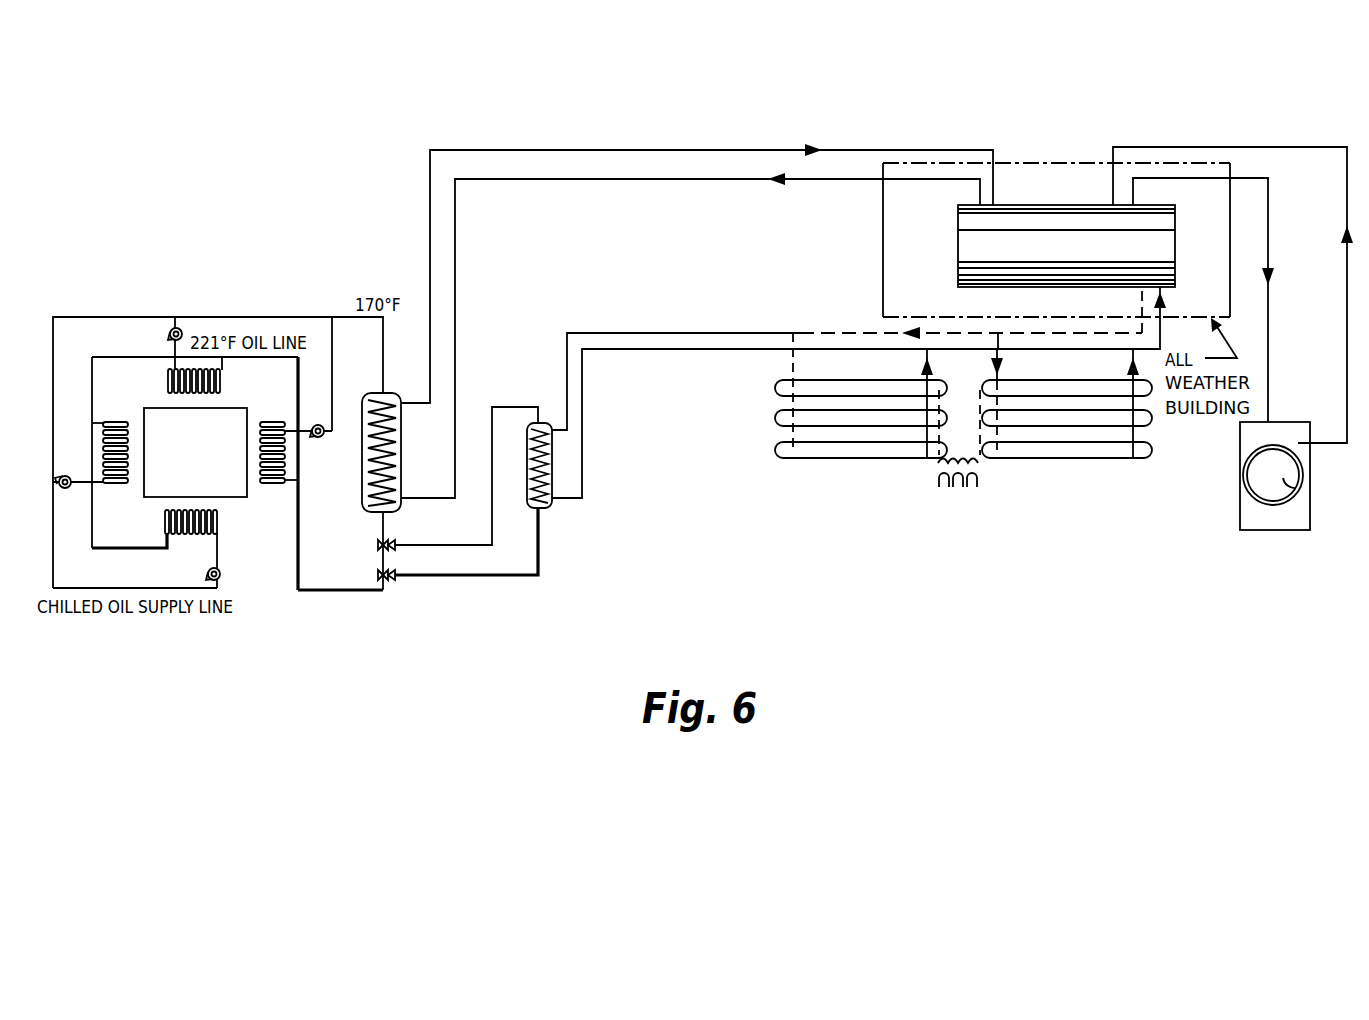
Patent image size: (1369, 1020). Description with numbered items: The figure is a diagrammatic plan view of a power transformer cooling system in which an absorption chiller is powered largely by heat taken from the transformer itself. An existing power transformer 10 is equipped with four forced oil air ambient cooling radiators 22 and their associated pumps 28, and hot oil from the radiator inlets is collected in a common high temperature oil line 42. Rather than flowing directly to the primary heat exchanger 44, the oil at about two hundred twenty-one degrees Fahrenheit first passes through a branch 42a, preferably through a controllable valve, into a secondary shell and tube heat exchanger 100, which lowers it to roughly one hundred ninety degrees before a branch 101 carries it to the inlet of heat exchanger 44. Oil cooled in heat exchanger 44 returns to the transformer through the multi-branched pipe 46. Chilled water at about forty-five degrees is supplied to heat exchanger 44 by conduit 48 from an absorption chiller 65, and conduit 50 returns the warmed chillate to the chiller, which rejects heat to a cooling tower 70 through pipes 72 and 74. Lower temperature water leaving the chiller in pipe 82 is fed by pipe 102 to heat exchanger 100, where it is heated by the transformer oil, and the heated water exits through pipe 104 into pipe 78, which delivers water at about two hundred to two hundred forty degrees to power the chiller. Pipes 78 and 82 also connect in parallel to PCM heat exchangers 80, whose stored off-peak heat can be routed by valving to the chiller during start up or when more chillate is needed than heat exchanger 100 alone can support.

The power transformer 10 is at (230, 497).
The forced oil air ambient cooling radiators 22 is at (168, 383).
The pumps 28 is at (172, 329).
The high temperature oil line 42 is at (327, 592).
The branch 42a is at (458, 577).
The heat exchanger 44 is at (402, 433).
The multi-branched pipe 46 is at (343, 316).
The conduit 48 is at (785, 149).
The conduit 50 is at (500, 180).
The absorption chiller 65 is at (958, 250).
The cooling tower 70 is at (1292, 487).
The pipe 72 is at (1268, 360).
The pipe 74 is at (1345, 355).
The pipe 78 is at (963, 403).
The PCM heat exchangers 80 is at (1030, 455).
The pipe 82 is at (958, 333).
The secondary heat exchanger 100 is at (548, 510).
The branch 101 is at (508, 407).
The pipe 102 is at (590, 333).
The pipe 104 is at (697, 350).